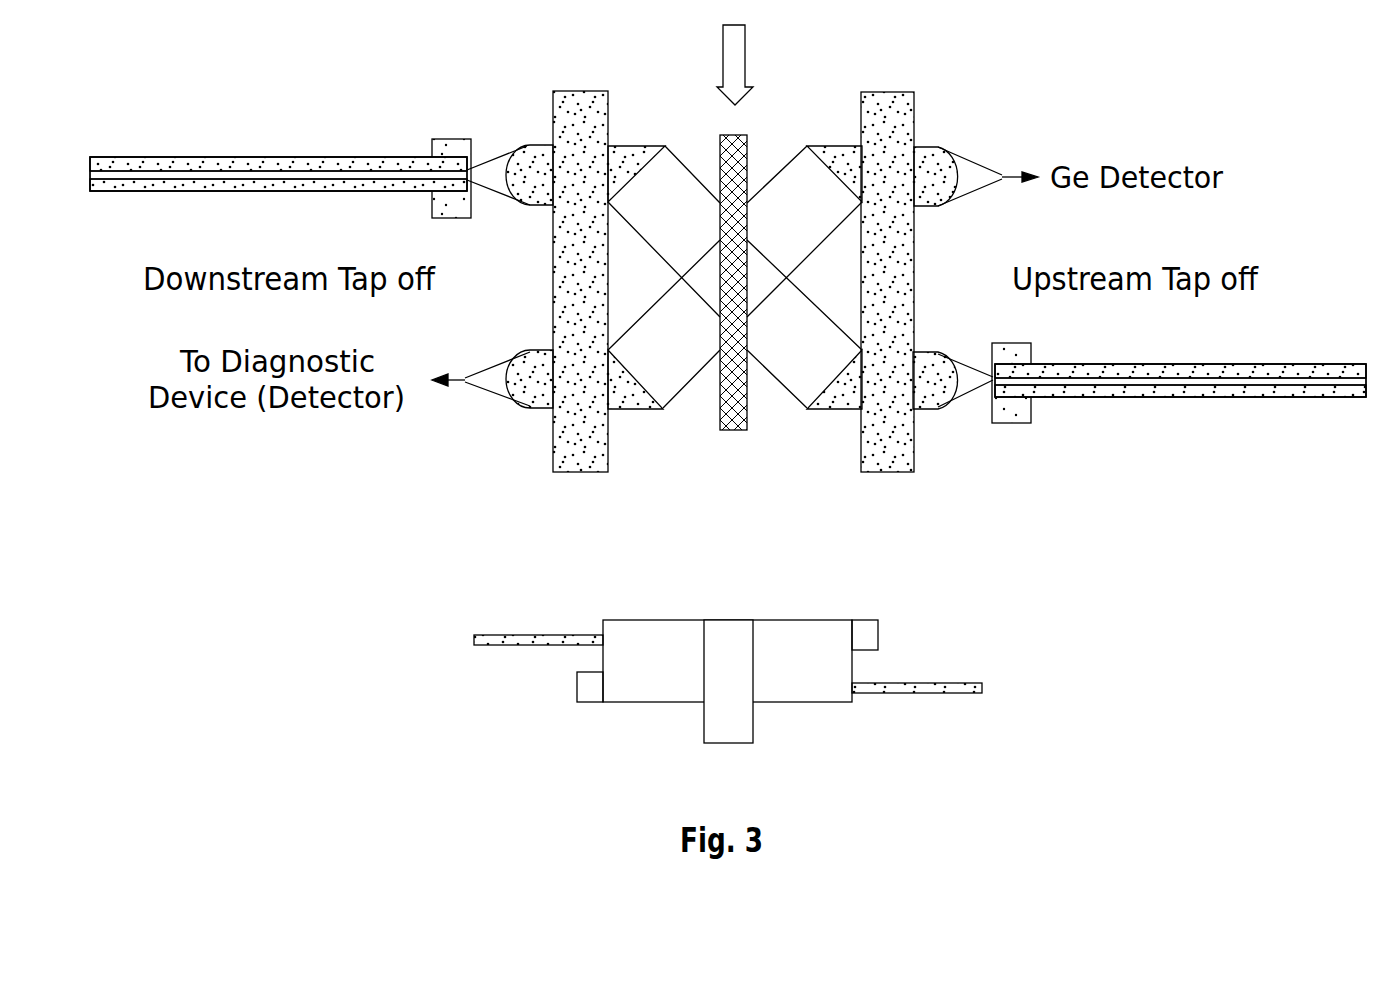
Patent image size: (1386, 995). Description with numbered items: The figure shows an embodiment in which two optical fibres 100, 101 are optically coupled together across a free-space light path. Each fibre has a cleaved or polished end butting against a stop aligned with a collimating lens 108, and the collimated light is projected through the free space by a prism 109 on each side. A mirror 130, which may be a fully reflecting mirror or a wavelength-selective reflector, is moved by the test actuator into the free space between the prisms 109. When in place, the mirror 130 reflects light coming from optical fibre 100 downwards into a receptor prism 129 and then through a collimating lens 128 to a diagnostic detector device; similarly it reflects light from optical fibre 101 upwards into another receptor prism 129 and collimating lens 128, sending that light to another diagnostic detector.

The optical fibre 100 is at (163, 163).
The optical fibre 101 is at (1292, 365).
The collimating lens 108 is at (538, 152).
The prism 109 is at (633, 152).
The collimating lens 128 is at (922, 148).
The receptor prism 129 is at (840, 153).
The mirror 130 is at (733, 430).